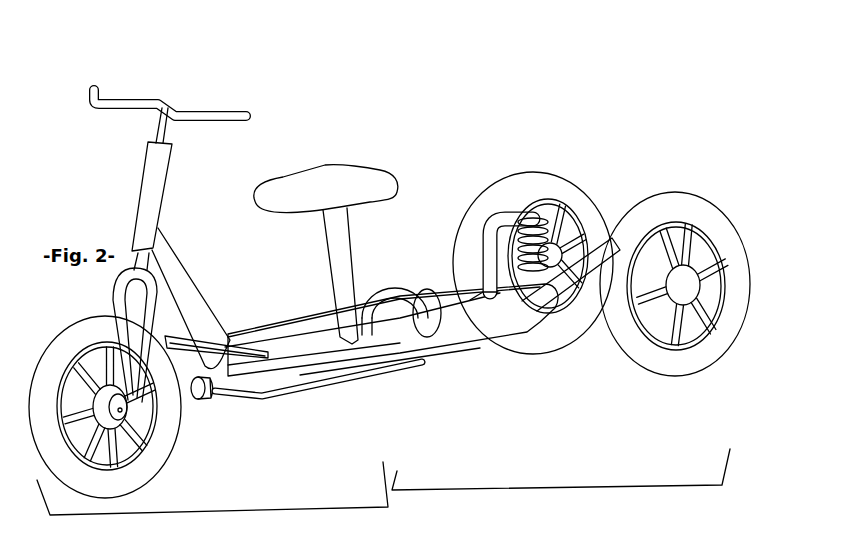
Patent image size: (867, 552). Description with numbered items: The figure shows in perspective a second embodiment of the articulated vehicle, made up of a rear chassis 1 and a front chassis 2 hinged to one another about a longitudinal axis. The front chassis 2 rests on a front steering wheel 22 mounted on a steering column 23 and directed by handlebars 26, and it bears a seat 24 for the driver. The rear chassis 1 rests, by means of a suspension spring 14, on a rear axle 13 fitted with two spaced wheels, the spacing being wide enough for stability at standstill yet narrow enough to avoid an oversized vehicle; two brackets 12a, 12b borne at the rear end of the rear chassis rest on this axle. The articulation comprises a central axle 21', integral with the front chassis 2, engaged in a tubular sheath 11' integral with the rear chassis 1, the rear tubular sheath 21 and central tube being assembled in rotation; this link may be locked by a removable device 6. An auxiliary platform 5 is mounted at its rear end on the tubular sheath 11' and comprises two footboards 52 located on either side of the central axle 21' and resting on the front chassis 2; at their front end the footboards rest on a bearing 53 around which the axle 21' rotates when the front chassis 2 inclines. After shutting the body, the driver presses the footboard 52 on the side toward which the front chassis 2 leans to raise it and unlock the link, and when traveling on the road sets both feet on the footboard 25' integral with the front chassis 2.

The rear chassis 1 is at (561, 469).
The front chassis 2 is at (191, 232).
The auxiliary platform 5 is at (274, 306).
The removable device 6 is at (360, 347).
The tubular sheath 11' is at (392, 376).
The bracket 12a is at (590, 257).
The bracket 12b is at (483, 247).
The rear axle 13 is at (570, 190).
The suspension spring 14 is at (520, 208).
The tubular sheath 21 is at (183, 361).
The central axle 21' is at (318, 406).
The front steering wheel 22 is at (167, 410).
The steering column 23 is at (147, 188).
The seat 24 is at (323, 180).
The footboard 25' is at (314, 399).
The handlebars 26 is at (123, 105).
The footboard 52 is at (427, 350).
The bearing 53 is at (250, 362).